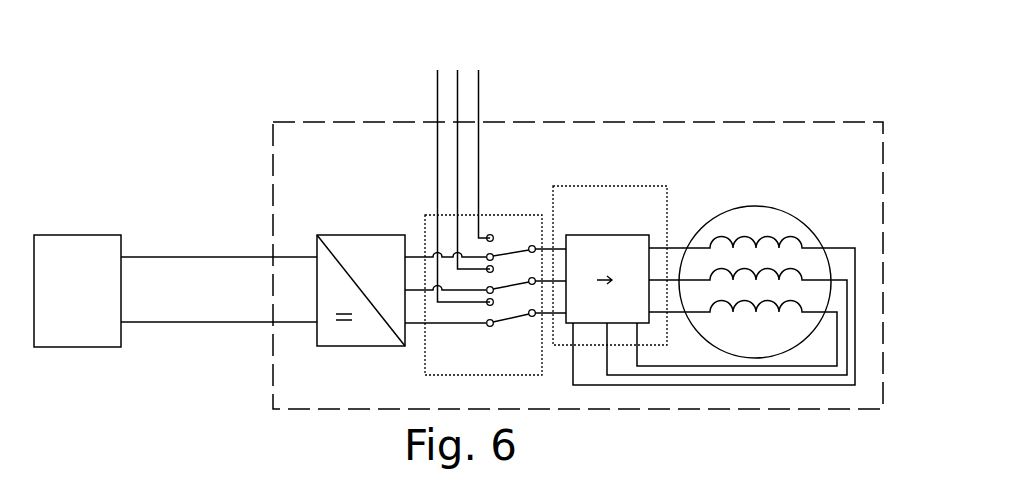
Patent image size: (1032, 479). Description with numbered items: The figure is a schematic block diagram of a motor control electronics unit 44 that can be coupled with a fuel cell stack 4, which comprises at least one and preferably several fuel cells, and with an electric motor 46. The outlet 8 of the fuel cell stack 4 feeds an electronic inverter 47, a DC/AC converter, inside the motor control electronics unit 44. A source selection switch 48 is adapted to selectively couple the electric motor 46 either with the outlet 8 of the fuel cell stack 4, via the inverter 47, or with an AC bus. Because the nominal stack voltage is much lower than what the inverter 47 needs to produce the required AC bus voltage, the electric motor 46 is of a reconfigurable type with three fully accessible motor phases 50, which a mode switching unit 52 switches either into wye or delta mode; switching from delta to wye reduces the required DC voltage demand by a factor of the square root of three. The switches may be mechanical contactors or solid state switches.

The fuel cell stack 4 is at (77, 235).
The outlet of the fuel cell stack 8 is at (139, 308).
The motor control electronics unit 44 is at (753, 74).
The electric motor 46 is at (872, 158).
The electronic inverter 47 is at (340, 247).
The source selection switch 48 is at (432, 216).
The motor phases 50 is at (746, 232).
The mode switching unit 52 is at (649, 186).